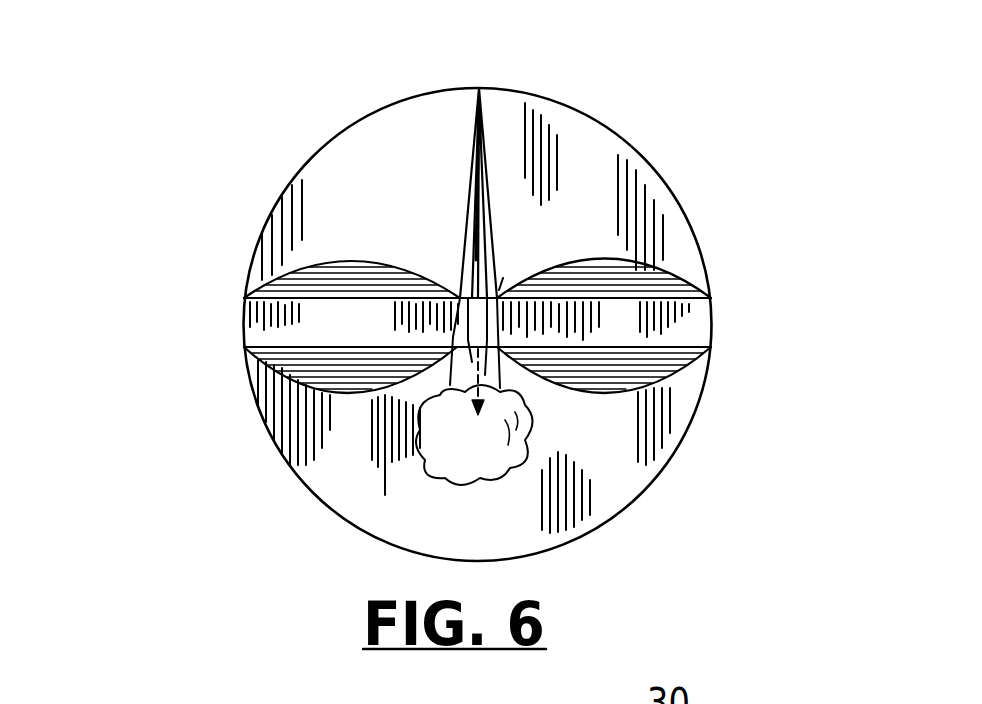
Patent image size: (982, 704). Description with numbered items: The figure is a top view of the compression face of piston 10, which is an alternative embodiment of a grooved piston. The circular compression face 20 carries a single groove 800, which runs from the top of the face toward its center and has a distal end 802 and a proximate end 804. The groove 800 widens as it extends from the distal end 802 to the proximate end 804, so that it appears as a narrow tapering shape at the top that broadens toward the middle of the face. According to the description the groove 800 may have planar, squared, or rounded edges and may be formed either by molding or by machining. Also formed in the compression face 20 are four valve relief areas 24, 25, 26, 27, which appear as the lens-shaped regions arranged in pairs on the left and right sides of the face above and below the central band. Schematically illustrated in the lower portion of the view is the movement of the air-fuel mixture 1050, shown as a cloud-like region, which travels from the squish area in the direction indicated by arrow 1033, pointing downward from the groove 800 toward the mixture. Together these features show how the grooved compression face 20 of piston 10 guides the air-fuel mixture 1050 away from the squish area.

The piston 10 is at (208, 100).
The compression face 20 is at (590, 153).
The valve relief area 24 is at (650, 270).
The valve relief area 25 is at (703, 353).
The valve relief area 26 is at (280, 265).
The valve relief area 27 is at (247, 375).
The groove 800 is at (463, 208).
The distal end 802 is at (479, 87).
The proximate end 804 is at (498, 297).
The arrow 1033 is at (530, 421).
The air-fuel mixture 1050 is at (440, 470).